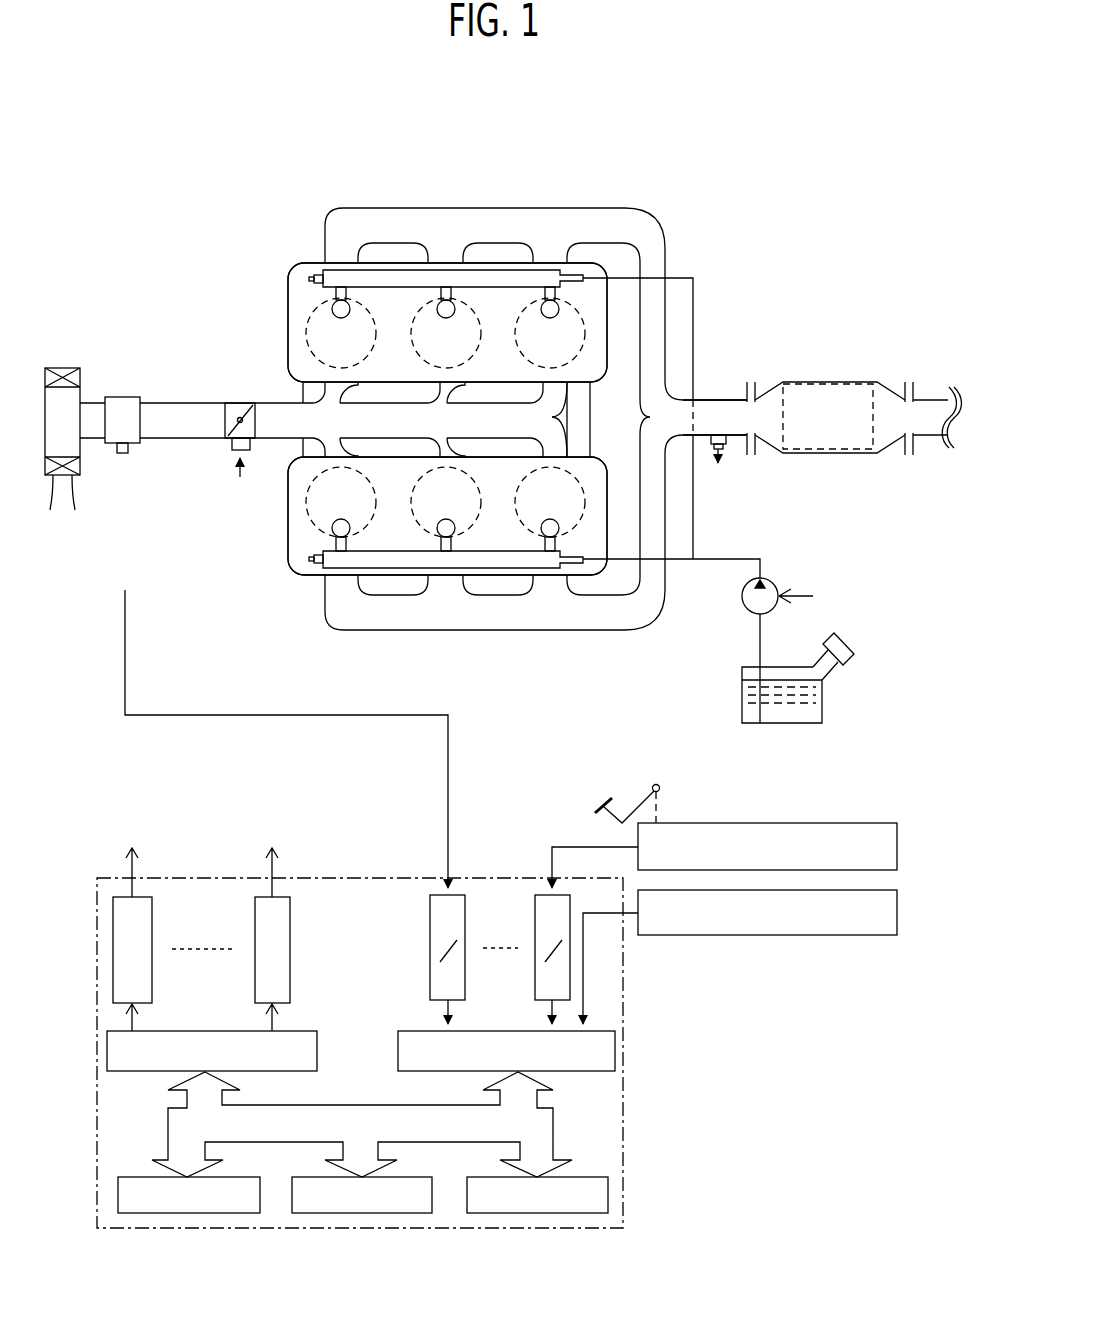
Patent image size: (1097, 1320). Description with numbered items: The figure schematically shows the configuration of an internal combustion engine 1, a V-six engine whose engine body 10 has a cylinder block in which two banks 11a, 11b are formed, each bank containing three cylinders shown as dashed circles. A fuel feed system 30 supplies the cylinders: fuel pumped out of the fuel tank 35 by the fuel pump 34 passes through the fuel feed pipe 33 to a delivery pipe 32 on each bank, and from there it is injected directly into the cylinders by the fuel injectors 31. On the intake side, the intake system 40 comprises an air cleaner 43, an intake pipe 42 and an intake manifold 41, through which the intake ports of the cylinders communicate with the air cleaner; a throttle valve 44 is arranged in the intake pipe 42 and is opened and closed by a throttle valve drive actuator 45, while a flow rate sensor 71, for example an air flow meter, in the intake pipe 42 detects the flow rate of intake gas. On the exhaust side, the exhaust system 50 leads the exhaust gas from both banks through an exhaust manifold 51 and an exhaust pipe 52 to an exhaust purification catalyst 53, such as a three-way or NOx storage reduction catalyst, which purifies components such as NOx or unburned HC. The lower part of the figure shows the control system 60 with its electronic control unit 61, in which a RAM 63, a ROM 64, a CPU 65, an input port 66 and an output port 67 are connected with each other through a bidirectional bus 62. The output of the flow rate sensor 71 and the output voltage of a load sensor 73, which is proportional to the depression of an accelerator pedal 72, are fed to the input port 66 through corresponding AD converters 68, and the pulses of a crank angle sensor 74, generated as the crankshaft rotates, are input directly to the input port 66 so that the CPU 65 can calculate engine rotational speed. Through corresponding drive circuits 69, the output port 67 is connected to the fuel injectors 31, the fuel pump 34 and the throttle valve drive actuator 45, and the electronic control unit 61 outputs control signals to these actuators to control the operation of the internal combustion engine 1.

The internal combustion engine 1 is at (817, 106).
The engine body 10 is at (284, 284).
The bank 11a is at (288, 312).
The bank 11b is at (289, 556).
The fuel feed system 30 is at (856, 582).
The fuel injector 31 is at (336, 538).
The delivery pipe 32 is at (521, 272).
The fuel feed pipe 33 is at (715, 558).
The fuel pump 34 is at (772, 578).
The fuel tank 35 is at (780, 724).
The intake system 40 is at (134, 330).
The intake manifold 41 is at (320, 430).
The intake pipe 42 is at (214, 403).
The air cleaner 43 is at (81, 480).
The throttle valve 44 is at (243, 410).
The throttle valve drive actuator 45 is at (225, 440).
The exhaust system 50 is at (735, 300).
The exhaust manifold 51 is at (630, 226).
The exhaust pipe 52 is at (720, 399).
The exhaust purification catalyst 53 is at (836, 380).
The control system 60 is at (735, 1105).
The electronic control unit (ECU) 61 is at (405, 878).
The bidirectional bus 62 is at (557, 1133).
The RAM 63 is at (200, 1213).
The ROM 64 is at (357, 1213).
The CPU 65 is at (540, 1213).
The input port 66 is at (410, 1031).
The output port 67 is at (307, 1031).
The AD converter 68 is at (535, 915).
The drive circuit 69 is at (255, 908).
The flow rate sensor 71 is at (124, 397).
The accelerator pedal 72 is at (655, 785).
The load sensor 73 is at (832, 823).
The crank angle sensor 74 is at (857, 935).